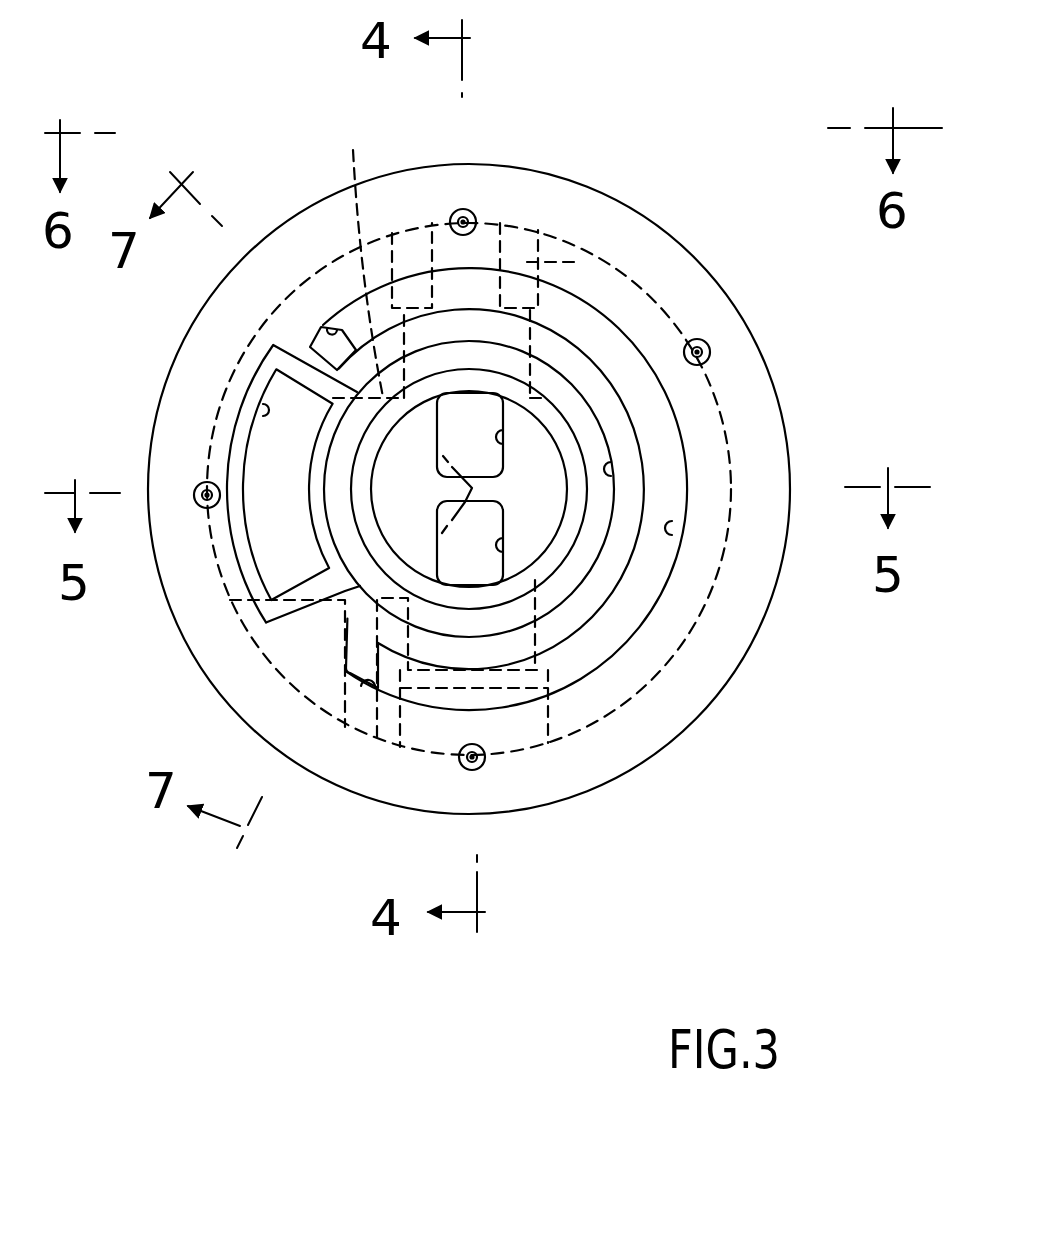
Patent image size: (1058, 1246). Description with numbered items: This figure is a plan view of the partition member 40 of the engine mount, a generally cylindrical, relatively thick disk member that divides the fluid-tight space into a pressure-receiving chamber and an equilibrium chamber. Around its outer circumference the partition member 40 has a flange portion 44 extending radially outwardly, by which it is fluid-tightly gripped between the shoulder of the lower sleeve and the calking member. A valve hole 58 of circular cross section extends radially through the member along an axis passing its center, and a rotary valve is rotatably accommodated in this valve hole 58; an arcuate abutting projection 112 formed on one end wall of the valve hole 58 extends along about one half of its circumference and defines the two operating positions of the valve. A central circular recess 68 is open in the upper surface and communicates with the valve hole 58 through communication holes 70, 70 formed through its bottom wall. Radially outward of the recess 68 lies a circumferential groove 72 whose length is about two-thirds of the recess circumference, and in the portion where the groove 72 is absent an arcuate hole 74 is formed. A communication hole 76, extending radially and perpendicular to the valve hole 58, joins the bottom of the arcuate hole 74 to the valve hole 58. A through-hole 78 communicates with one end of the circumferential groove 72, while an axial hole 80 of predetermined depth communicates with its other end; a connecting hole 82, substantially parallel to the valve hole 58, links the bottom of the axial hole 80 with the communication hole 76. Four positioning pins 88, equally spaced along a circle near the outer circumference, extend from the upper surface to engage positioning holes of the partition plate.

The partition member 40 is at (664, 122).
The flange portion 44 is at (645, 740).
The valve hole 58 is at (545, 631).
The central circular recess 68 is at (614, 476).
The communication holes 70 is at (499, 436).
The circumferential groove 72 is at (677, 537).
The arcuate hole 74 is at (262, 411).
The communication hole 76 is at (360, 255).
The through-hole 78 is at (326, 330).
The axial hole 80 is at (368, 686).
The connecting hole 82 is at (343, 603).
The positioning pins 88 is at (468, 210).
The arcuate abutting projection 112 is at (580, 262).